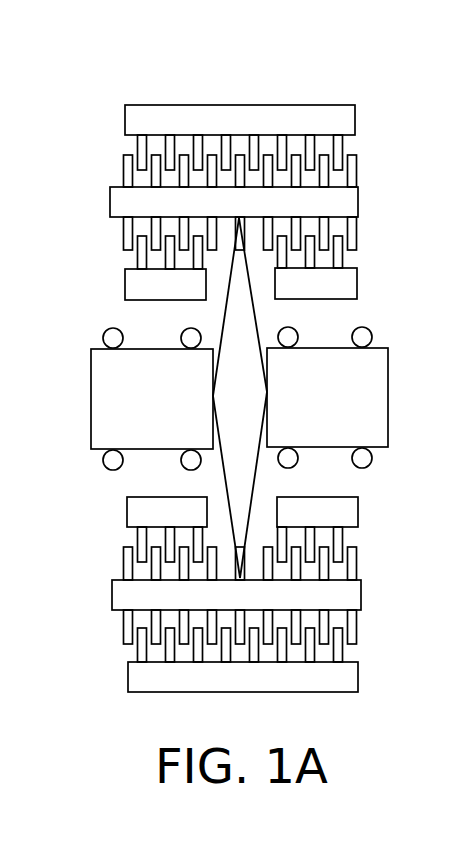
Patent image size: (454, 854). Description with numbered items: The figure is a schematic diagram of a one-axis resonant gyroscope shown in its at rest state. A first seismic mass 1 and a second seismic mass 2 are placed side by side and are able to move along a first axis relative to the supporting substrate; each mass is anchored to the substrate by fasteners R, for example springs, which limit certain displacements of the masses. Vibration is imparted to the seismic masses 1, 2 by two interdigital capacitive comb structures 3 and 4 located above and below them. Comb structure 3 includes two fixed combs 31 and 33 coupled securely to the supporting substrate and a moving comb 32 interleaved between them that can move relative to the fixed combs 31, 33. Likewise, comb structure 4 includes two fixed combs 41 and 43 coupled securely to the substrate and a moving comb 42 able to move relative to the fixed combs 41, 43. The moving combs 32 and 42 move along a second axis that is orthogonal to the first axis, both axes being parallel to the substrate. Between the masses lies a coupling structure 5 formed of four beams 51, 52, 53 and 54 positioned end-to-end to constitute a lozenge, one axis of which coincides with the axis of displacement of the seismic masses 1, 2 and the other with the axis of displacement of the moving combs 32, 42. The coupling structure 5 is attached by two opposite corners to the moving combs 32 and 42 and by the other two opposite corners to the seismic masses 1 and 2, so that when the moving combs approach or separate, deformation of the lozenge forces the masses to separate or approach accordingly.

The first seismic mass 1 is at (100, 388).
The second seismic mass 2 is at (332, 353).
The interdigital capacitive comb structure 3 is at (110, 170).
The fixed comb 31 is at (133, 117).
The moving comb 32 is at (353, 203).
The fixed comb 33 is at (132, 287).
The interdigital capacitive comb structure 4 is at (100, 620).
The fixed comb 41 is at (130, 677).
The moving comb 42 is at (353, 597).
The fixed comb 43 is at (133, 513).
The coupling structure 5 is at (211, 316).
The beam 51 is at (224, 330).
The beam 52 is at (256, 318).
The beam 53 is at (256, 470).
The beam 54 is at (222, 470).
The fastener R is at (365, 338).